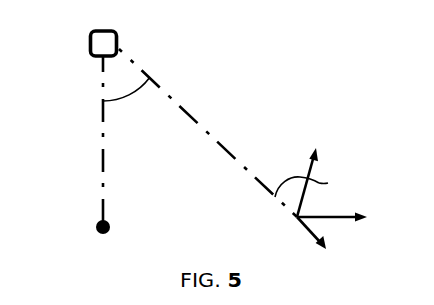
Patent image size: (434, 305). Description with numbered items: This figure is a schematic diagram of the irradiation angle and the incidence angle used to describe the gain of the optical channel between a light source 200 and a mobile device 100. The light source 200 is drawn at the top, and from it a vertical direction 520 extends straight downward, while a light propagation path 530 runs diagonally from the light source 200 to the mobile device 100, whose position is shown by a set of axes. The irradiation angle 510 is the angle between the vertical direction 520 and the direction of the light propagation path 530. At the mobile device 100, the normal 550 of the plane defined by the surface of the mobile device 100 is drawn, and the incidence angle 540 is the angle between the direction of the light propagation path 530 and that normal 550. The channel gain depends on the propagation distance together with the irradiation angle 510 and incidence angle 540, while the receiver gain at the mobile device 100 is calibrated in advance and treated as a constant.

The mobile device 100 is at (274, 218).
The light source 200 is at (119, 44).
The irradiation angle 510 is at (130, 99).
The vertical direction 520 is at (99, 163).
The light propagation path 530 is at (196, 121).
The incidence angle 540 is at (287, 175).
The normal 550 is at (322, 183).